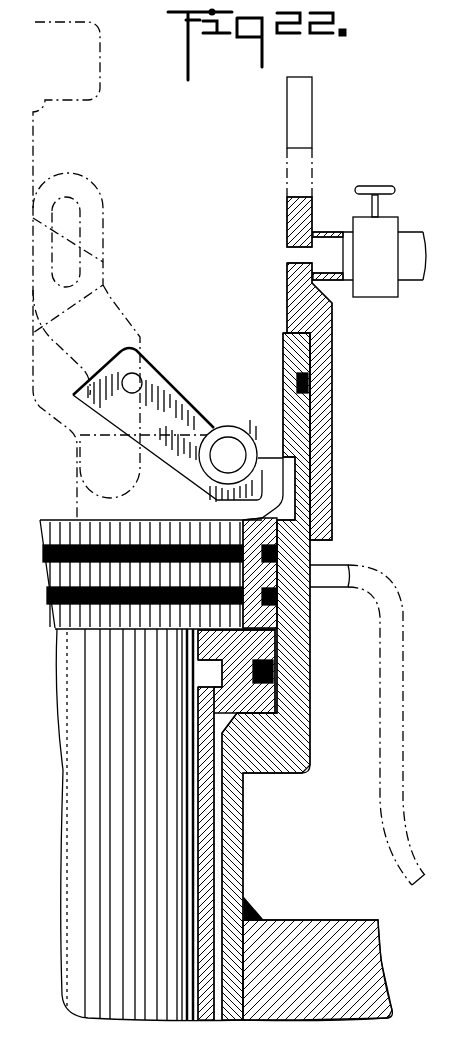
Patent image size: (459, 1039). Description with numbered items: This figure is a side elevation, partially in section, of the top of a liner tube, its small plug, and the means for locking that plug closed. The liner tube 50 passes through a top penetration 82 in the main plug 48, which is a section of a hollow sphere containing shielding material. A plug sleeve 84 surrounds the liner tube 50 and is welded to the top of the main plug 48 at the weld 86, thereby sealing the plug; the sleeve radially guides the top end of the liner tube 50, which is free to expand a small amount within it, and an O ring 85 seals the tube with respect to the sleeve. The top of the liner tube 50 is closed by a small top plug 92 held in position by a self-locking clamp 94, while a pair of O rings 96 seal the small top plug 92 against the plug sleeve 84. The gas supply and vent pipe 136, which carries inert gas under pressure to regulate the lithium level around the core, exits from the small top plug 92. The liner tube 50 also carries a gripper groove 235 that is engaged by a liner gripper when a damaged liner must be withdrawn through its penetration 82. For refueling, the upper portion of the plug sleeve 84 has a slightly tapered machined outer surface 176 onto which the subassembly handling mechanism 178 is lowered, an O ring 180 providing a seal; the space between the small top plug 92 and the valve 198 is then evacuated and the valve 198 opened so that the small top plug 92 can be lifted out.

The subassembly handling mechanism 178 is at (327, 168).
The valve 198 is at (373, 283).
The O ring 180 is at (310, 385).
The tapered machined outer surface 176 is at (310, 447).
The self-locking clamp 94 is at (176, 345).
The O rings 96 is at (282, 580).
The gas supply and vent pipe 136 is at (333, 588).
The O ring 85 is at (275, 674).
The gripper groove 235 is at (203, 673).
The plug sleeve 84 is at (277, 760).
The liner tube 50 is at (207, 843).
The small top plug 92 is at (95, 865).
The weld 86 is at (257, 909).
The main plug 48 is at (340, 932).
The top penetration 82 is at (234, 978).